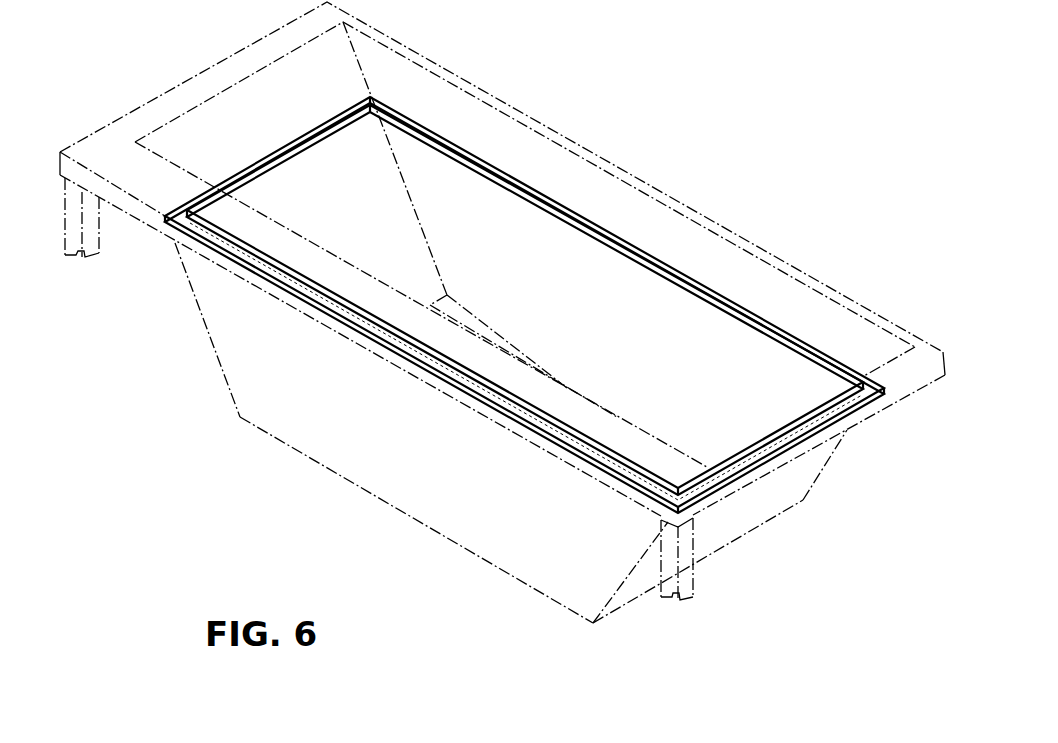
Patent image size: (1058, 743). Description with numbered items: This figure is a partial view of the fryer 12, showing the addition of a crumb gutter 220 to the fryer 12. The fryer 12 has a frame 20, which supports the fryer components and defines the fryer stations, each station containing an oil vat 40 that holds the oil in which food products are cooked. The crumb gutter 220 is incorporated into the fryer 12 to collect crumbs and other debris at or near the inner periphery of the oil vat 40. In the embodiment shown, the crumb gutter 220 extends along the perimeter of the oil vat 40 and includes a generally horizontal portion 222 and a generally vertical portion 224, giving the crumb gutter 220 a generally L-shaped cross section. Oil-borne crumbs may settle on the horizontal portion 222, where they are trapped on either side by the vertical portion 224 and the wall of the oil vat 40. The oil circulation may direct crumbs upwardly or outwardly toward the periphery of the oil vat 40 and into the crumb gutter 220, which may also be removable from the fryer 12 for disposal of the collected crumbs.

The fryer 12 is at (640, 133).
The frame 20 is at (100, 233).
The oil vat 40 is at (810, 490).
The crumb gutter 220 is at (669, 269).
The horizontal portion 222 is at (177, 217).
The vertical portion 224 is at (234, 240).